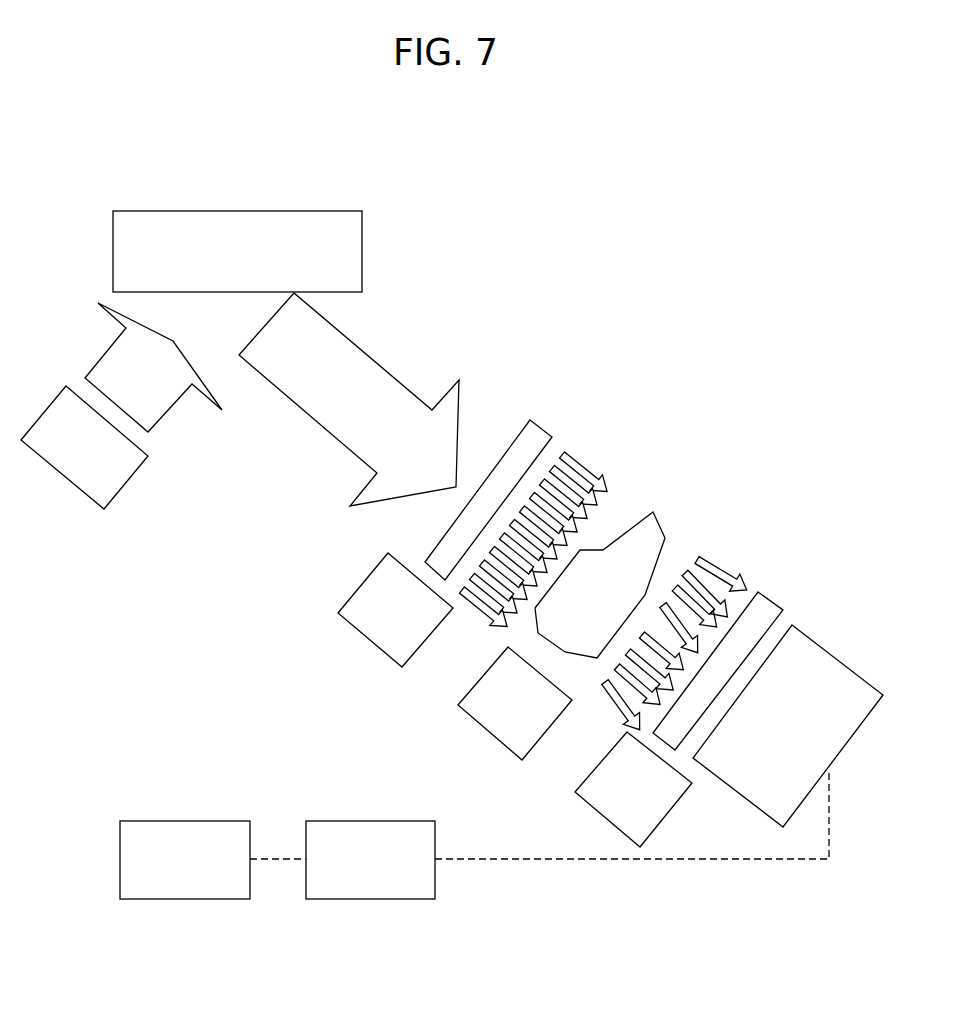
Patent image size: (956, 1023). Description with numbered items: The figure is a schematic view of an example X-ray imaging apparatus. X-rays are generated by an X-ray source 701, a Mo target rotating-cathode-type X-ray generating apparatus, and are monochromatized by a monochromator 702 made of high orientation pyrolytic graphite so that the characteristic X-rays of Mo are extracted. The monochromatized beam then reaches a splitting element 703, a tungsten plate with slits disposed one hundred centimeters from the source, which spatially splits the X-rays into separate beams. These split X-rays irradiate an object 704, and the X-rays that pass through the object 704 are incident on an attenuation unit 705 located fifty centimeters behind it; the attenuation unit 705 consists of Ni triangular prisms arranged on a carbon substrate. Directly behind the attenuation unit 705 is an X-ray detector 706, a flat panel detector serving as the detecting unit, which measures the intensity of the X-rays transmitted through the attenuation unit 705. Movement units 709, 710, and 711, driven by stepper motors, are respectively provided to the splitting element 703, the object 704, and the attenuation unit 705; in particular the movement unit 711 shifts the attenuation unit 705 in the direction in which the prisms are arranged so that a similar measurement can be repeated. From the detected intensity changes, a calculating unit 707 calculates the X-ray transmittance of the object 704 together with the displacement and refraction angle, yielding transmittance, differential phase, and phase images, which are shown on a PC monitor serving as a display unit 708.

The X-ray source 701 is at (82, 494).
The monochromator 702 is at (343, 211).
The splitting element 703 is at (552, 430).
The object 704 is at (663, 520).
The attenuation unit 705 is at (770, 591).
The X-ray detector 706 is at (837, 657).
The calculating unit 707 is at (373, 899).
The display unit 708 is at (168, 899).
The movement unit 709 is at (358, 635).
The movement unit 710 is at (480, 728).
The movement unit 711 is at (593, 808).